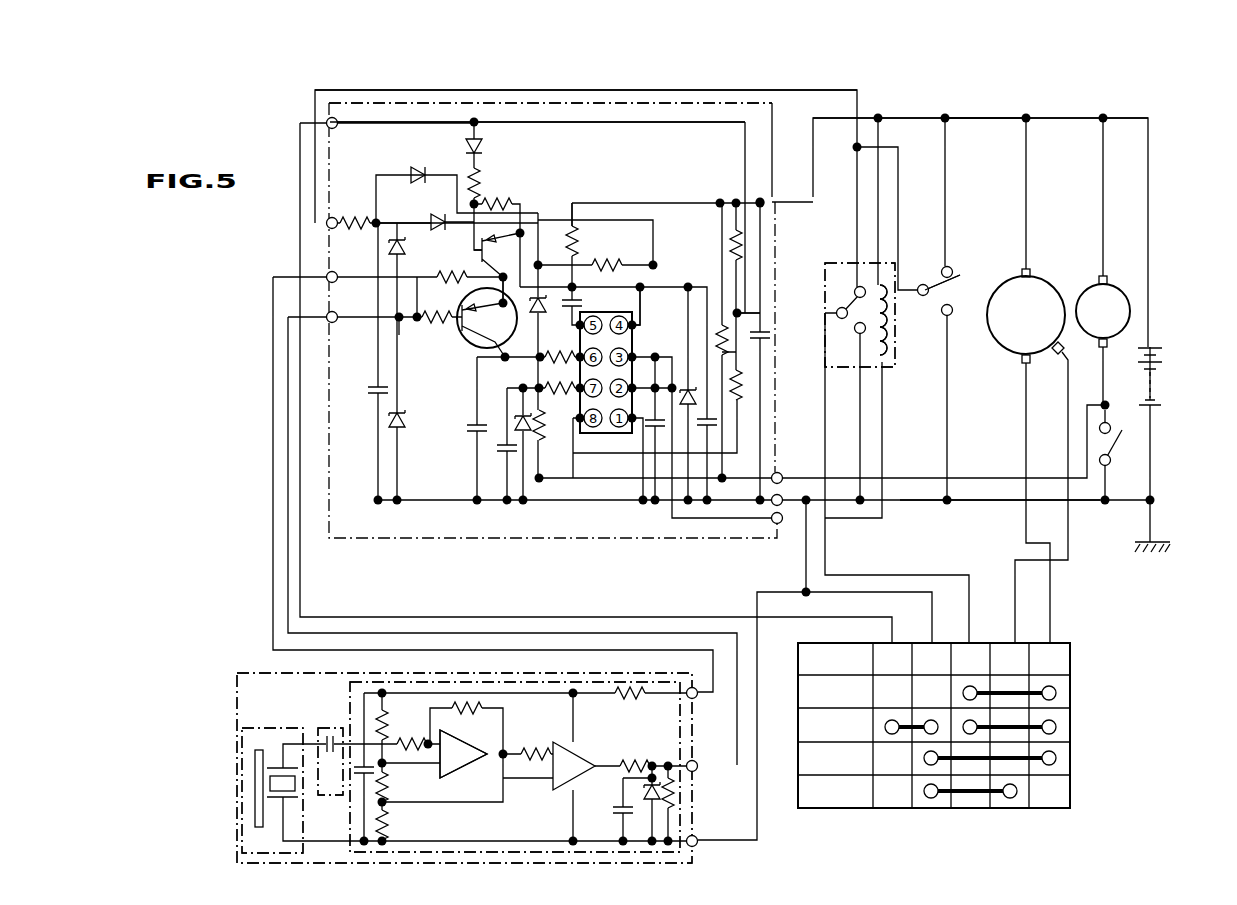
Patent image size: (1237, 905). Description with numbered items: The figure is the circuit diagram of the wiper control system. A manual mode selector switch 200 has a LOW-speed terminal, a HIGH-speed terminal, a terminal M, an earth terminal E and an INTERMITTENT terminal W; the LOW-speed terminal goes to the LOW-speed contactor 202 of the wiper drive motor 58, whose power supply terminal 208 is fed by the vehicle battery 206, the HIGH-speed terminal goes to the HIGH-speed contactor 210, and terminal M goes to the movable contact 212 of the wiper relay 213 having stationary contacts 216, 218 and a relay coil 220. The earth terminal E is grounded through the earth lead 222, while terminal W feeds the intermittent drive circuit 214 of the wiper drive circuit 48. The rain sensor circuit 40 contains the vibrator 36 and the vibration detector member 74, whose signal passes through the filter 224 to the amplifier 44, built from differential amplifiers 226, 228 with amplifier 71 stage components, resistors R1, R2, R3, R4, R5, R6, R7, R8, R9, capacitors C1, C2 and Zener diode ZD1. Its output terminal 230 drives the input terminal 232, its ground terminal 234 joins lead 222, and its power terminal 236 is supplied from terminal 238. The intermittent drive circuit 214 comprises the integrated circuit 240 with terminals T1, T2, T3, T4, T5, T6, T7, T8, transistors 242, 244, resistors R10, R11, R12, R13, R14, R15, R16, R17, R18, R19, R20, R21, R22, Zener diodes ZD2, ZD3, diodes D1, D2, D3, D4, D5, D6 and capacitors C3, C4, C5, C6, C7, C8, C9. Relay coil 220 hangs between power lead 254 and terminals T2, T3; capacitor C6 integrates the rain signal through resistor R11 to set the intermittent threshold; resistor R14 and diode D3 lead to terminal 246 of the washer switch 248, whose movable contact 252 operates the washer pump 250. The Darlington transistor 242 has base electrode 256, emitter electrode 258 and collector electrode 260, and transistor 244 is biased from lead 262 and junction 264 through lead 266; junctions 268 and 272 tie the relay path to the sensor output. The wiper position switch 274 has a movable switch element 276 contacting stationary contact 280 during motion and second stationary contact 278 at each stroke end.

The vibrator 36 is at (255, 762).
The rain sensor circuit 40 is at (455, 864).
The amplifier 44 is at (565, 866).
The wiper drive circuit 48 is at (884, 106).
The wiper drive motor 58 is at (1062, 280).
The operational amplifier 71 is at (484, 768).
The vibration detector member 74 is at (272, 752).
The manual mode selector switch 200 is at (897, 815).
The LOW-speed contactor 202 is at (1020, 365).
The vehicle battery 206 is at (1165, 355).
The power supply terminal 208 is at (1028, 268).
The HIGH-speed contactor 210 is at (1052, 354).
The movable contact 212 is at (836, 309).
The wiper relay 213 is at (825, 262).
The intermittent drive circuit 214 is at (758, 103).
The stationary contact 216 is at (863, 287).
The stationary contact 218 is at (864, 334).
The relay coil 220 is at (888, 325).
The earth lead 222 is at (975, 502).
The filter 224 is at (328, 728).
The differential amplifier 226 is at (443, 732).
The differential amplifier 228 is at (558, 742).
The output terminal 230 is at (699, 767).
The input terminal 232 is at (326, 318).
The ground terminal 234 is at (698, 846).
The power supply terminal 236 is at (692, 687).
The terminal 238 is at (326, 276).
The integrated circuit 240 is at (643, 285).
The transistor 242 is at (498, 306).
The transistor 244 is at (490, 237).
The terminal 246 is at (1112, 427).
The washer switch 248 is at (1125, 445).
The washer pump 250 is at (1130, 306).
The movable contact 252 is at (1100, 442).
The power lead 254 is at (988, 118).
The base electrode 256 is at (468, 317).
The emitter electrode 258 is at (494, 340).
The collector electrode 260 is at (498, 347).
The lead 262 is at (670, 121).
The junction 264 is at (742, 314).
The lead 266 is at (470, 176).
The junction 268 is at (396, 318).
The junction 272 is at (574, 215).
The wiper position switch 274 is at (951, 254).
The movable switch element 276 is at (930, 292).
The second stationary contact 278 is at (953, 270).
The stationary contact 280 is at (948, 316).
The INTERMITTENT terminal W is at (328, 119).
The earth terminal E is at (781, 477).
The resistor R1 is at (382, 690).
The resistor R2 is at (388, 783).
The resistor R3 is at (388, 822).
The resistor R4 is at (407, 742).
The resistor R5 is at (467, 706).
The resistor R6 is at (537, 752).
The resistor R7 is at (634, 694).
The resistor R8 is at (634, 765).
The resistor R9 is at (675, 794).
The resistor R10 is at (580, 235).
The resistor R11 is at (562, 358).
The resistor R12 is at (625, 263).
The resistor R13 is at (545, 391).
The resistor R14 is at (542, 440).
The resistor R15 is at (728, 340).
The resistor R16 is at (742, 388).
The resistor R17 is at (730, 240).
The resistor R18 is at (436, 316).
The resistor R19 is at (479, 182).
The resistor R20 is at (497, 202).
The resistor R21 is at (443, 275).
The resistor R22 is at (348, 222).
The capacitor C1 is at (362, 780).
The capacitor C2 is at (618, 808).
The capacitor C3 is at (656, 428).
The capacitor C4 is at (712, 422).
The capacitor C5 is at (577, 298).
The capacitor C6 is at (470, 432).
The capacitor C7 is at (503, 452).
The capacitor C8 is at (766, 337).
The capacitor C9 is at (368, 392).
The diode D1 is at (432, 218).
The diode D2 is at (536, 318).
The diode D3 is at (523, 437).
The diode D4 is at (478, 142).
The diode D5 is at (388, 248).
The diode D6 is at (420, 167).
The Zener diode ZD1 is at (642, 795).
The Zener diode ZD2 is at (688, 504).
The Zener diode ZD3 is at (393, 432).
The earth terminal T1 is at (643, 430).
The output terminal T2 is at (633, 388).
The output terminal T3 is at (634, 357).
The power supply terminal T4 is at (640, 322).
The oscillation-suppression terminal T5 is at (578, 325).
The charge detector terminal T6 is at (578, 357).
The washer terminal T7 is at (578, 390).
The rain sensor terminal T8 is at (575, 436).